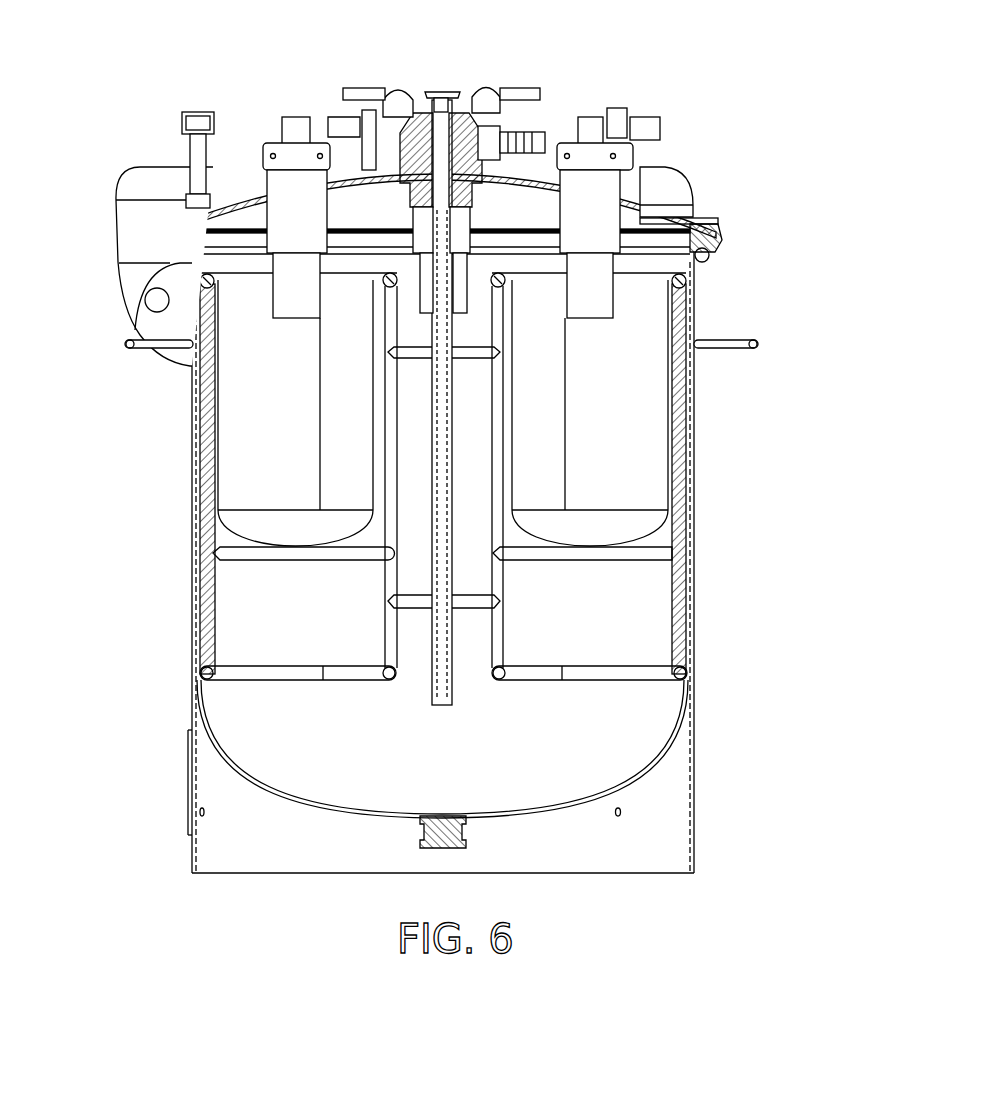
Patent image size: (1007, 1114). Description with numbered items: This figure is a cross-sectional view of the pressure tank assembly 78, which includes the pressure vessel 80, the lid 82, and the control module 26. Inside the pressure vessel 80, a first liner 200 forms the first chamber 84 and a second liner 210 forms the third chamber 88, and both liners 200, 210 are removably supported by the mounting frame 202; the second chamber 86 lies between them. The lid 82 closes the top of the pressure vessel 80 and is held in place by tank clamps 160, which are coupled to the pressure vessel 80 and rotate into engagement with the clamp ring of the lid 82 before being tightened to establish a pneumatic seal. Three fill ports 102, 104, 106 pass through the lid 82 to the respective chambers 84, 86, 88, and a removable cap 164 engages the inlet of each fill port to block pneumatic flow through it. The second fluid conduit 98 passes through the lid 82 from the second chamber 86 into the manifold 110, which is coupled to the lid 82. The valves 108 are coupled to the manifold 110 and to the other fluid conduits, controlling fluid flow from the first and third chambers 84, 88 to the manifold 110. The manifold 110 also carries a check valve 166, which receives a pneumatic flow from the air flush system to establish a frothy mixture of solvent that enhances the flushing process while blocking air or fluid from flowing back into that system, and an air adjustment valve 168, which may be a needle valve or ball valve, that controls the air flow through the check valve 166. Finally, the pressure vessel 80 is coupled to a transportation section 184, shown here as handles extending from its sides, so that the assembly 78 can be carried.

The control module 26 is at (699, 46).
The pressure tank assembly 78 is at (121, 833).
The pressure vessel 80 is at (694, 875).
The lid 82 is at (721, 241).
The first chamber 84 is at (618, 433).
The second chamber 86 is at (655, 598).
The third chamber 88 is at (238, 403).
The second fluid conduit 98 is at (455, 706).
The fill port 102 is at (617, 305).
The fill port 104 is at (463, 286).
The fill port 106 is at (263, 191).
The valves 108 is at (404, 93).
The manifold 110 is at (431, 100).
The tank clamps 160 is at (130, 179).
The removable cap 164 is at (294, 118).
The check valve 166 is at (535, 128).
The air adjustment valve 168 is at (452, 94).
The transportation section 184 is at (125, 343).
The first liner 200 is at (671, 516).
The mounting frame 202 is at (684, 671).
The second liner 210 is at (212, 539).